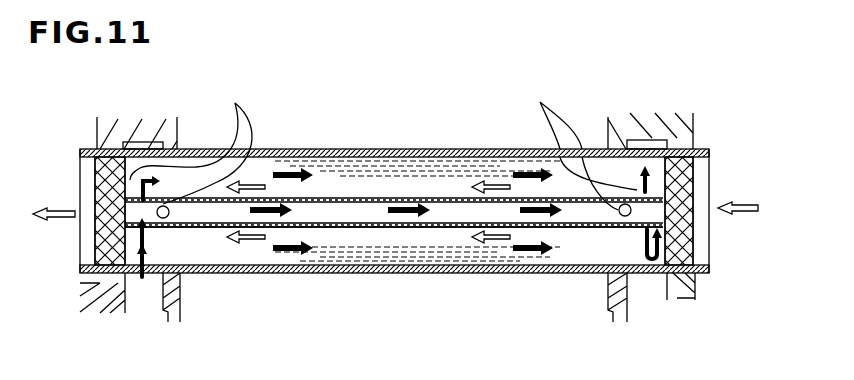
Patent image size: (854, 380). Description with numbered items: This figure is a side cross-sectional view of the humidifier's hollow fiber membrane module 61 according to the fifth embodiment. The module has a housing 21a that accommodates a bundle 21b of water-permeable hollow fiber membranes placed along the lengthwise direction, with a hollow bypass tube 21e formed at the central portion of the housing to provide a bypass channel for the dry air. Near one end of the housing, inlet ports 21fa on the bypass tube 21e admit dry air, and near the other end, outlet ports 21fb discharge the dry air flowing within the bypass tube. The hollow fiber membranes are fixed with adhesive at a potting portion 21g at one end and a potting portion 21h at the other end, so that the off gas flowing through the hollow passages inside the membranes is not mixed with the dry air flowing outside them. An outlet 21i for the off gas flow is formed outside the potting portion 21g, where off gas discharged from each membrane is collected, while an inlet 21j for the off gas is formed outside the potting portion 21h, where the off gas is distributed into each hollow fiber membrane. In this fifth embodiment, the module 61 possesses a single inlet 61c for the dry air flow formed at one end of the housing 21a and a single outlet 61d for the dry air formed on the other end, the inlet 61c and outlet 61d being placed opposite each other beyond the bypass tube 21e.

The hollow fiber membrane module 61 is at (505, 106).
The inlet for the dry air flow 61c is at (111, 308).
The outlet for the dry air 61d is at (687, 150).
The housing 21a is at (387, 149).
The bundle of the hollow fiber membranes 21b is at (413, 245).
The bypass tube 21e is at (270, 229).
The inlet ports for the introduction of the dry air 21fa is at (206, 143).
The outlet ports for discharging the dry air 21fb is at (575, 145).
The potting portion 21g is at (97, 153).
The potting portion 21h is at (694, 181).
The outlet for the off gas flow 21i is at (84, 233).
The inlet for the off gas 21j is at (701, 230).